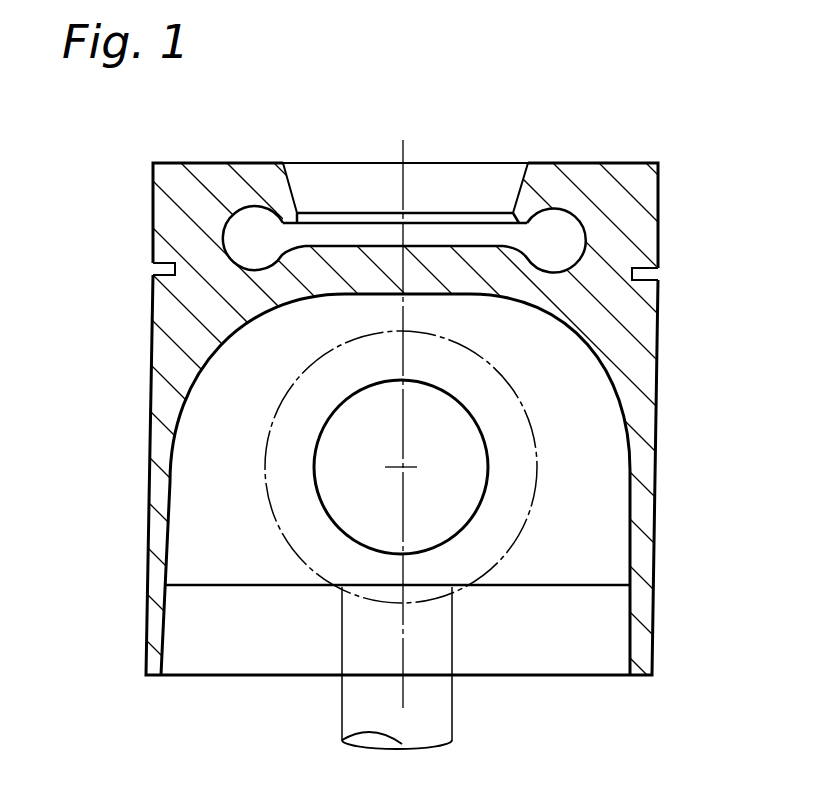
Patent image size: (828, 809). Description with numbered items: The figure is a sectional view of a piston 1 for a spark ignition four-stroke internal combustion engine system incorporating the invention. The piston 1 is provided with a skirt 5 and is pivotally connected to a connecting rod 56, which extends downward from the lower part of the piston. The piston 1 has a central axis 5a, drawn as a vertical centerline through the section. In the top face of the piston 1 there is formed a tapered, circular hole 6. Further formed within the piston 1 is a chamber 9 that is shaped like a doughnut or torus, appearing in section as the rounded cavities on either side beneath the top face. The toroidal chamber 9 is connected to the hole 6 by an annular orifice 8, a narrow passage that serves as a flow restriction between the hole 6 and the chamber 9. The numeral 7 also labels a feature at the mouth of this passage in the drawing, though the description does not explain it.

The piston 1 is at (642, 296).
The skirt 5 is at (643, 525).
The central axis 5a is at (405, 312).
The tapered circular hole 6 is at (343, 184).
The slit 7 is at (524, 178).
The annular orifice 8 is at (512, 233).
The toroidal chamber 9 is at (568, 227).
The connecting rod 56 is at (443, 708).